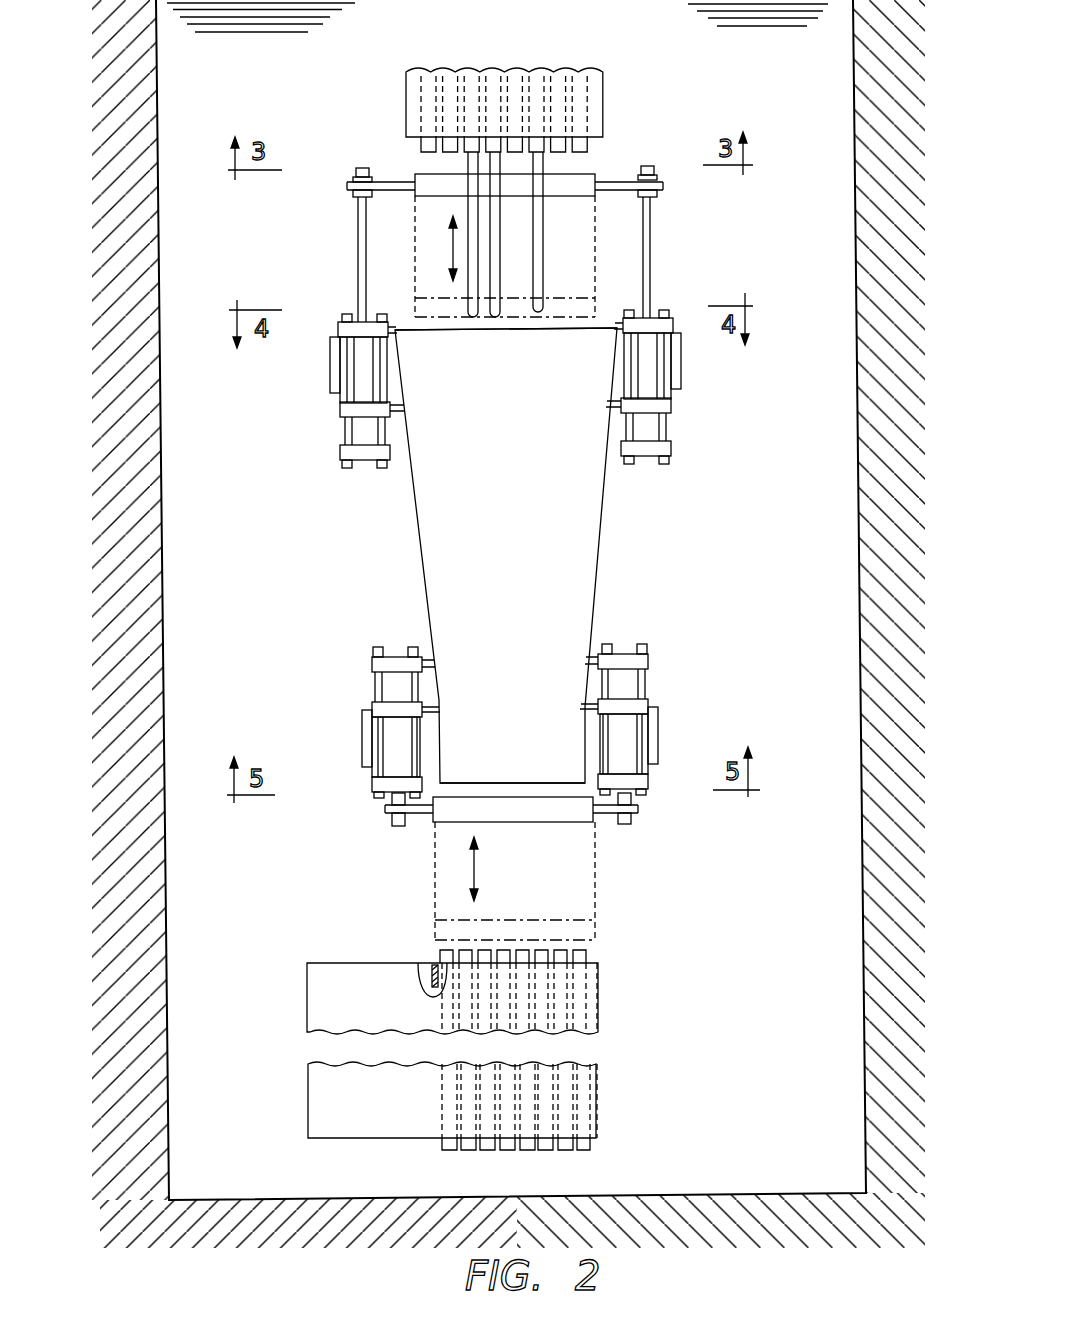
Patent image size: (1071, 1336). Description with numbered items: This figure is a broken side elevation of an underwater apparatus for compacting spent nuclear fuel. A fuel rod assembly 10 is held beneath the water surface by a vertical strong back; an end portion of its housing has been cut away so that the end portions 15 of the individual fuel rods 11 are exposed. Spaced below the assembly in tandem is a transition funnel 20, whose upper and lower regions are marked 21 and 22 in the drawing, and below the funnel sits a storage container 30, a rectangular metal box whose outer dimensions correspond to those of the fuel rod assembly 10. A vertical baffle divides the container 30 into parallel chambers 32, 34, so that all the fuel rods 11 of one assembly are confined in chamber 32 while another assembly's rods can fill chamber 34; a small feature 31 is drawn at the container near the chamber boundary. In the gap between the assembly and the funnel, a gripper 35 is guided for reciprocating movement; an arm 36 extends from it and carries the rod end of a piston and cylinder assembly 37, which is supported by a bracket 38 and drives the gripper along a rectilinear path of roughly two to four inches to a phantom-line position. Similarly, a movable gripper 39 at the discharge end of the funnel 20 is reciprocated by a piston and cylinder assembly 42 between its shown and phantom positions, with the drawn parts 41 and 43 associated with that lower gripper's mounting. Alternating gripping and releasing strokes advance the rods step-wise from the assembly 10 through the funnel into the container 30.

The fuel rod assembly 10 is at (603, 90).
The fuel rods 11 is at (465, 120).
The end portions of fuel rods 15 is at (555, 152).
The transition funnel 20 is at (601, 528).
The funnel upper end 21 is at (597, 317).
The funnel lower end 22 is at (493, 783).
The storage container 30 is at (598, 1017).
The slot 31 is at (430, 963).
The chamber 32 is at (533, 1011).
The chamber 34 is at (380, 1011).
The gripper 35 is at (595, 174).
The arm 36 is at (347, 186).
The piston and cylinder assembly 37 is at (330, 380).
The bracket 38 is at (340, 316).
The movable gripper 39 is at (595, 818).
The bolt 41 is at (385, 810).
The piston and cylinder assembly 42 is at (362, 745).
The nut 43 is at (375, 790).